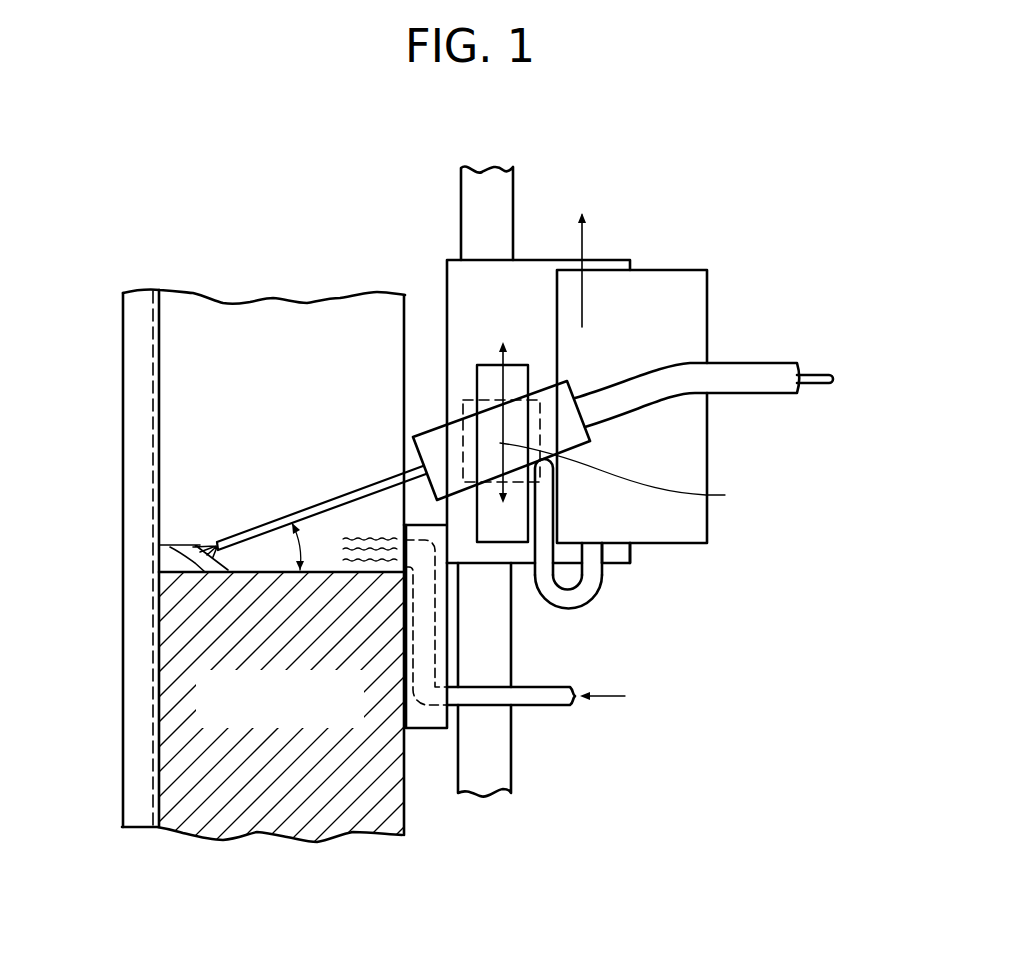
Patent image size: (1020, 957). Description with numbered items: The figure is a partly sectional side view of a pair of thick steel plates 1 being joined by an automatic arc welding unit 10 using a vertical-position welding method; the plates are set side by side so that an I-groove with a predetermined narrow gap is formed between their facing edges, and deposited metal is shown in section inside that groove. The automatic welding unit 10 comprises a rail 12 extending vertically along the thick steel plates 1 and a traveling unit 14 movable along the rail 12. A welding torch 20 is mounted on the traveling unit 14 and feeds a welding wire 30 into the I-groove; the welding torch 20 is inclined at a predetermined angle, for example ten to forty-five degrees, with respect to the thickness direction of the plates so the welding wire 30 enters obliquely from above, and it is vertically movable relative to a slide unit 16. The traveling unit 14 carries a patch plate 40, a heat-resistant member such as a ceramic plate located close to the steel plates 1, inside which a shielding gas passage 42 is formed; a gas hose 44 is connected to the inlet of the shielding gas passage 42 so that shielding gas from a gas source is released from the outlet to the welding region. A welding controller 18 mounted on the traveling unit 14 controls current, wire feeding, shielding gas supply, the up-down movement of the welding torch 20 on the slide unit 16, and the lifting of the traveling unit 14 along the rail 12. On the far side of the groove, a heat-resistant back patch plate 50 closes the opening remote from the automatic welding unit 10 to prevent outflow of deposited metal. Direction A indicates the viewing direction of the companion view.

The thick steel plate 1 is at (251, 333).
The viewing direction A is at (277, 230).
The automatic arc welding unit 10 is at (668, 221).
The rail 12 is at (500, 767).
The traveling unit 14 is at (615, 570).
The slide unit 16 is at (517, 547).
The welding controller 18 is at (687, 305).
The welding torch 20 is at (578, 440).
The welding wire 30 is at (267, 525).
The patch plate 40 is at (422, 722).
The shielding gas passage 42 is at (435, 638).
The gas hose 44 is at (540, 705).
The back patch plate 50 is at (137, 422).